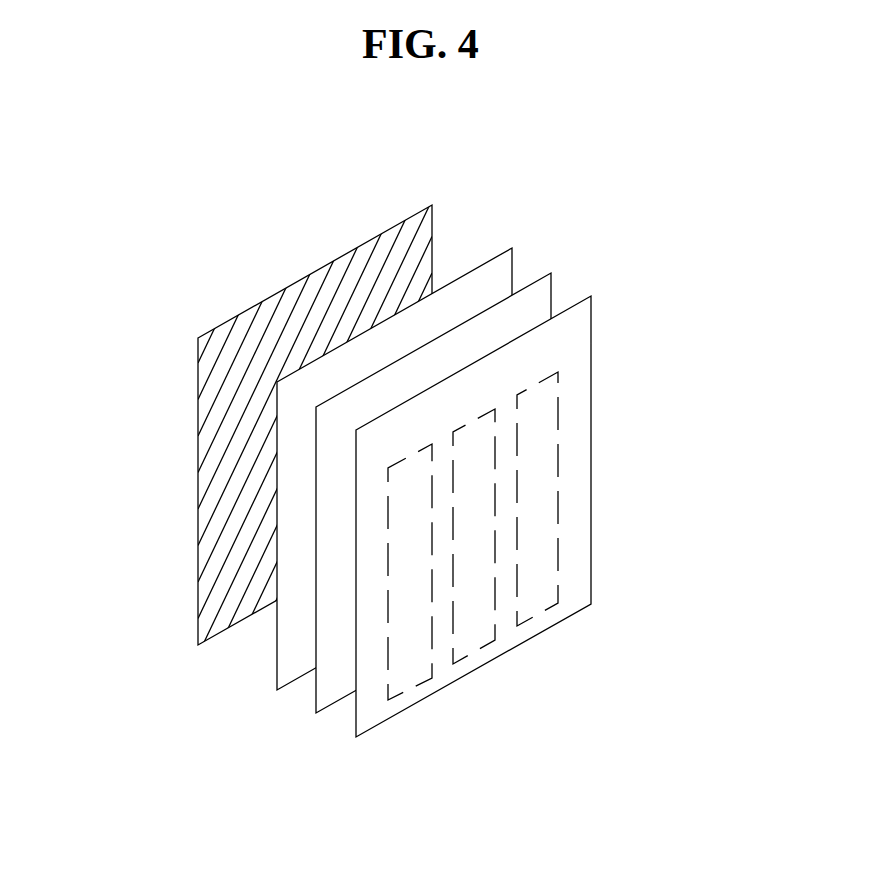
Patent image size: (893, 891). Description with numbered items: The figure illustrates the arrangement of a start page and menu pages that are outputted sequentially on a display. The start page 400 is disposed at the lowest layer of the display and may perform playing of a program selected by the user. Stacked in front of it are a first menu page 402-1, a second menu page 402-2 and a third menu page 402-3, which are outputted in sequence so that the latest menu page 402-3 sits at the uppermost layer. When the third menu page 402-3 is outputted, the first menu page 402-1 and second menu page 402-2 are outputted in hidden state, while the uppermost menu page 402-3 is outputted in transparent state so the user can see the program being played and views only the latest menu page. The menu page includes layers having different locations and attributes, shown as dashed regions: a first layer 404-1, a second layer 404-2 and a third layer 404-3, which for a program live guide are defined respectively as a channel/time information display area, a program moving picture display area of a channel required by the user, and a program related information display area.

The start page 400 is at (198, 412).
The first menu page 402-1 is at (513, 258).
The second menu page 402-2 is at (552, 285).
The third menu page 402-3 is at (592, 322).
The first layer 404-1 is at (400, 697).
The second layer 404-2 is at (490, 645).
The third layer 404-3 is at (560, 603).